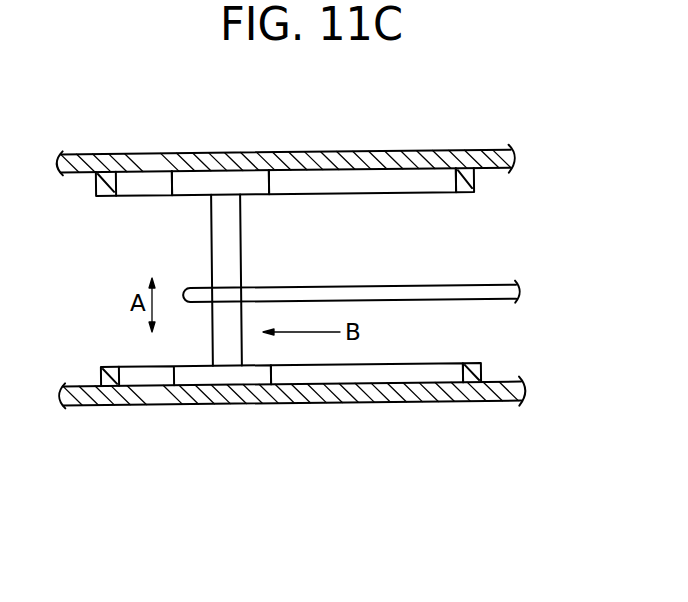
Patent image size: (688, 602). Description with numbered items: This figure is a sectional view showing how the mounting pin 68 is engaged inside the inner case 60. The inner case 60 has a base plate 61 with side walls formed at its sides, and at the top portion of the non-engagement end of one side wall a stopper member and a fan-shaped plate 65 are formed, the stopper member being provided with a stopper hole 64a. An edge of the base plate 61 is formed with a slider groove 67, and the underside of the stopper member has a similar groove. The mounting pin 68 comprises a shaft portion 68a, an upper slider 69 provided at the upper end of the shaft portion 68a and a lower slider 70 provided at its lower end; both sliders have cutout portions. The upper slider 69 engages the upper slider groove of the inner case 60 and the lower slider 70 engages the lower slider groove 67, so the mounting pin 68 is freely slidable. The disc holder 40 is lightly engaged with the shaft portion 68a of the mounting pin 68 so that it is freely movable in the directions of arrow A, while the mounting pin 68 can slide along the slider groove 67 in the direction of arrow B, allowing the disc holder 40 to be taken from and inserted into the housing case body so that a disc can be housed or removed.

The disc holder 40 is at (372, 288).
The inner case 60 is at (292, 442).
The base plate 61 is at (280, 407).
The stopper hole 64a is at (157, 165).
The fan-shaped plate 65 is at (420, 160).
The slider groove 67 is at (428, 180).
The mounting pin 68 is at (211, 280).
The shaft portion 68a is at (232, 241).
The upper slider 69 is at (232, 180).
The lower slider 70 is at (223, 377).